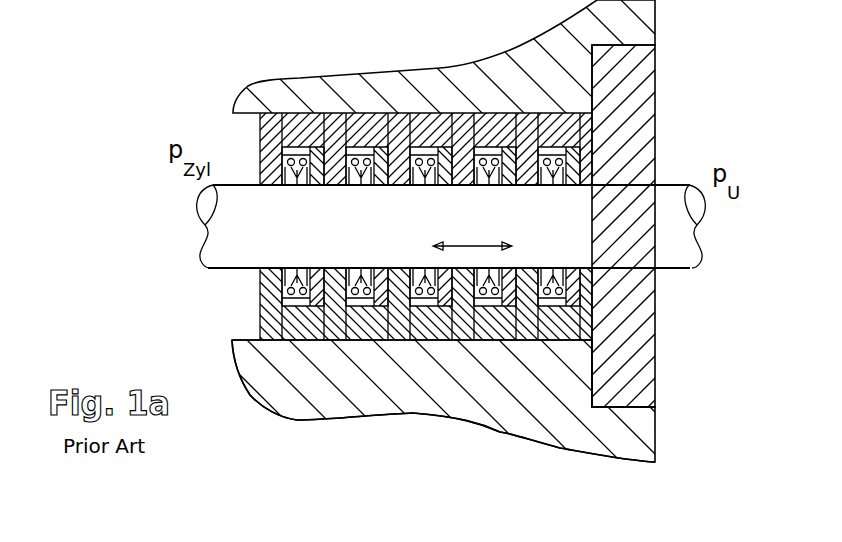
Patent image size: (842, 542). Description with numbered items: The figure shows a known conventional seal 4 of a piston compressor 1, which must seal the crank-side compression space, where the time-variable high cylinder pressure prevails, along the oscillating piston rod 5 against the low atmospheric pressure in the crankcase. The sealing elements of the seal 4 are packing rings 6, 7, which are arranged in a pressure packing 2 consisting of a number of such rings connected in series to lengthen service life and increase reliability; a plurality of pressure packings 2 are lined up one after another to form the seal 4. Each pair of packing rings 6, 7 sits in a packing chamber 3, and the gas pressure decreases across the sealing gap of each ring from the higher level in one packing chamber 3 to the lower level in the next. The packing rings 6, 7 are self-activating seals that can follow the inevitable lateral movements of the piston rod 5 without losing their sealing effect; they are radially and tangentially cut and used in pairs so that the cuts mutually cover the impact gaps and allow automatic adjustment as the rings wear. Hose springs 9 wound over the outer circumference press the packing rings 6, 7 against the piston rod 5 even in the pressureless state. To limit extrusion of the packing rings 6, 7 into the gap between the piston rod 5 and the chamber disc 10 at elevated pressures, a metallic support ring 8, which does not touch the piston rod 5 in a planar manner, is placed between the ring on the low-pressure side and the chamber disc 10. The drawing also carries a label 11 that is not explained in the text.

The piston compressor 1 is at (386, 428).
The pressure packing 2 is at (430, 303).
The packing chamber 3 is at (430, 152).
The seal 4 is at (487, 343).
The piston rod 5 is at (614, 233).
The packing ring 6 is at (552, 173).
The packing ring 7 is at (578, 280).
The support ring 8 is at (558, 282).
The hose spring 9 is at (305, 158).
The chamber disc 10 is at (567, 330).
The housing part 11 is at (462, 388).